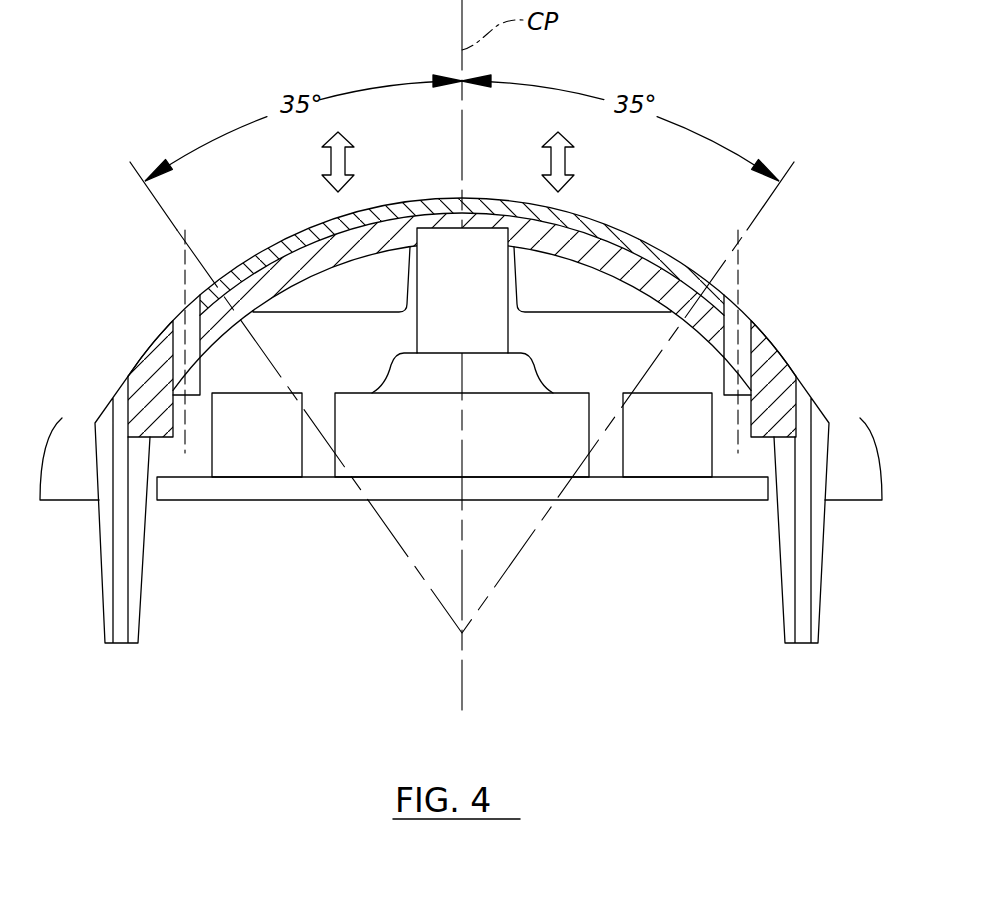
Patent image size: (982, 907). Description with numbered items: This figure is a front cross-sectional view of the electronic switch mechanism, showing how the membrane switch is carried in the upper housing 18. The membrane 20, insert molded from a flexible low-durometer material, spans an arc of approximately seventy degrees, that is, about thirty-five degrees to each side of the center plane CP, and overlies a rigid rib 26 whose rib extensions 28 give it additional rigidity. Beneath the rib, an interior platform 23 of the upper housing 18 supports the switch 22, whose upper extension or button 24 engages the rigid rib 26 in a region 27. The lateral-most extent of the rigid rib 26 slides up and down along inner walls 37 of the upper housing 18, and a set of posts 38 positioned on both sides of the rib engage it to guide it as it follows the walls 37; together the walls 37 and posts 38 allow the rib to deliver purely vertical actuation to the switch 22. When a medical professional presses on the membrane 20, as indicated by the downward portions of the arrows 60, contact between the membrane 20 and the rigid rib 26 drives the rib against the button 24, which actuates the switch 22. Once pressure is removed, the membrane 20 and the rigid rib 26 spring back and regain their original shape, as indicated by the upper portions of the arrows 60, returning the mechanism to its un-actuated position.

The upper housing 18 is at (856, 477).
The membrane 20 is at (628, 237).
The switch 22 is at (372, 453).
The interior platform 23 is at (273, 487).
The button 24 is at (440, 318).
The rigid rib 26 is at (673, 283).
The region 27 is at (430, 200).
The rib extensions 28 is at (315, 290).
The inner walls 37 is at (120, 407).
The posts 38 is at (193, 383).
The arrows 60 is at (347, 162).